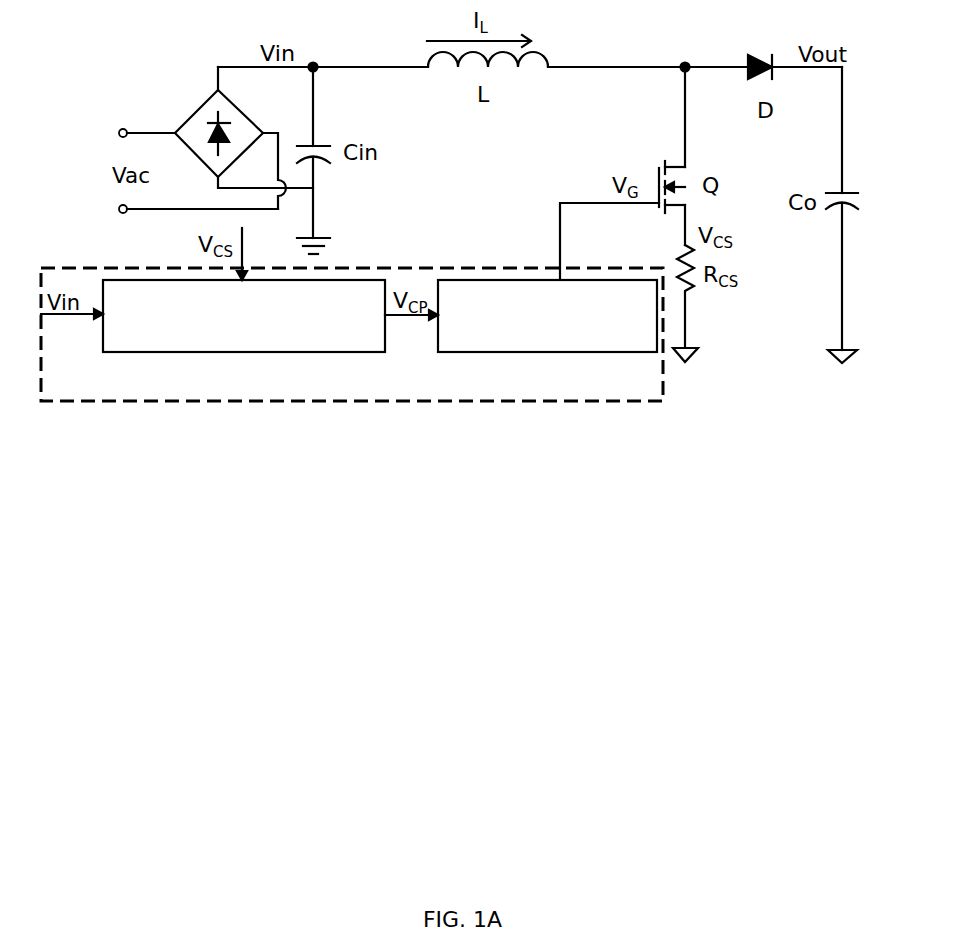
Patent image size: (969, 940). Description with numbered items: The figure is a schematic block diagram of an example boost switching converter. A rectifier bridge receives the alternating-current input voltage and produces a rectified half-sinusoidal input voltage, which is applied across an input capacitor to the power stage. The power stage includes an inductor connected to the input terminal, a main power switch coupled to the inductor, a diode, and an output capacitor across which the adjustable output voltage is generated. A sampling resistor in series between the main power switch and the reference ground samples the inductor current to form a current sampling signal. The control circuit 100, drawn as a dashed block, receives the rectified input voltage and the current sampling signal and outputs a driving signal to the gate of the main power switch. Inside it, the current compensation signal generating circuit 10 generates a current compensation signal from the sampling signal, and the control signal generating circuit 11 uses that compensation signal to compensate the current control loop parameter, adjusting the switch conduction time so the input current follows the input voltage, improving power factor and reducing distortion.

The current compensation signal generating circuit 10 is at (378, 340).
The control signal generating circuit 11 is at (654, 341).
The control circuit 100 is at (437, 395).